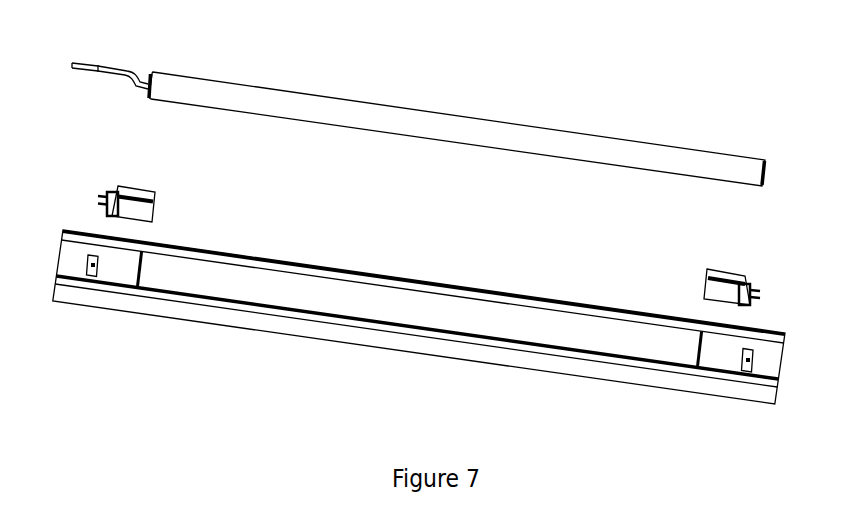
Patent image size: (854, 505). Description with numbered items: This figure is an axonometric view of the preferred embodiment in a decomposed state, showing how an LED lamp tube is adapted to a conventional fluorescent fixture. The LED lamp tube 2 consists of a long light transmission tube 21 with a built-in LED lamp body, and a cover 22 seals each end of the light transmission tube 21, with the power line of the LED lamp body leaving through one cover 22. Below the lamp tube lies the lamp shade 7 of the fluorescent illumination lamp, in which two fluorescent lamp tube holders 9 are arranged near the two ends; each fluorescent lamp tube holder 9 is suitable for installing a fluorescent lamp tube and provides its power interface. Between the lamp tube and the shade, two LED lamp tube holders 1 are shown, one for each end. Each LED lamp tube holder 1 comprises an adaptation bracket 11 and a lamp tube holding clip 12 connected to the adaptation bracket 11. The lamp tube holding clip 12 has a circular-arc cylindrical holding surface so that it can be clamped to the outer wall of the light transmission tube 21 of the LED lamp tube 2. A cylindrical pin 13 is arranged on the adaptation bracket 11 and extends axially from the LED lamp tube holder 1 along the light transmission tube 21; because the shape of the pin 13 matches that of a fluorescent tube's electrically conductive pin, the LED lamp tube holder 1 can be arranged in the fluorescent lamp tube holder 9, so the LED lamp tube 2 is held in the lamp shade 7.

The LED lamp tube holder 1 is at (416, 215).
The LED lamp tube 2 is at (503, 85).
The lamp shade 7 is at (374, 333).
The fluorescent lamp tube holder 9 is at (98, 264).
The adaptation bracket 11 is at (750, 283).
The lamp tube holding clip 12 is at (137, 213).
The cylindrical pin 13 is at (98, 202).
The light transmission tube 21 is at (443, 128).
The cover 22 is at (150, 78).